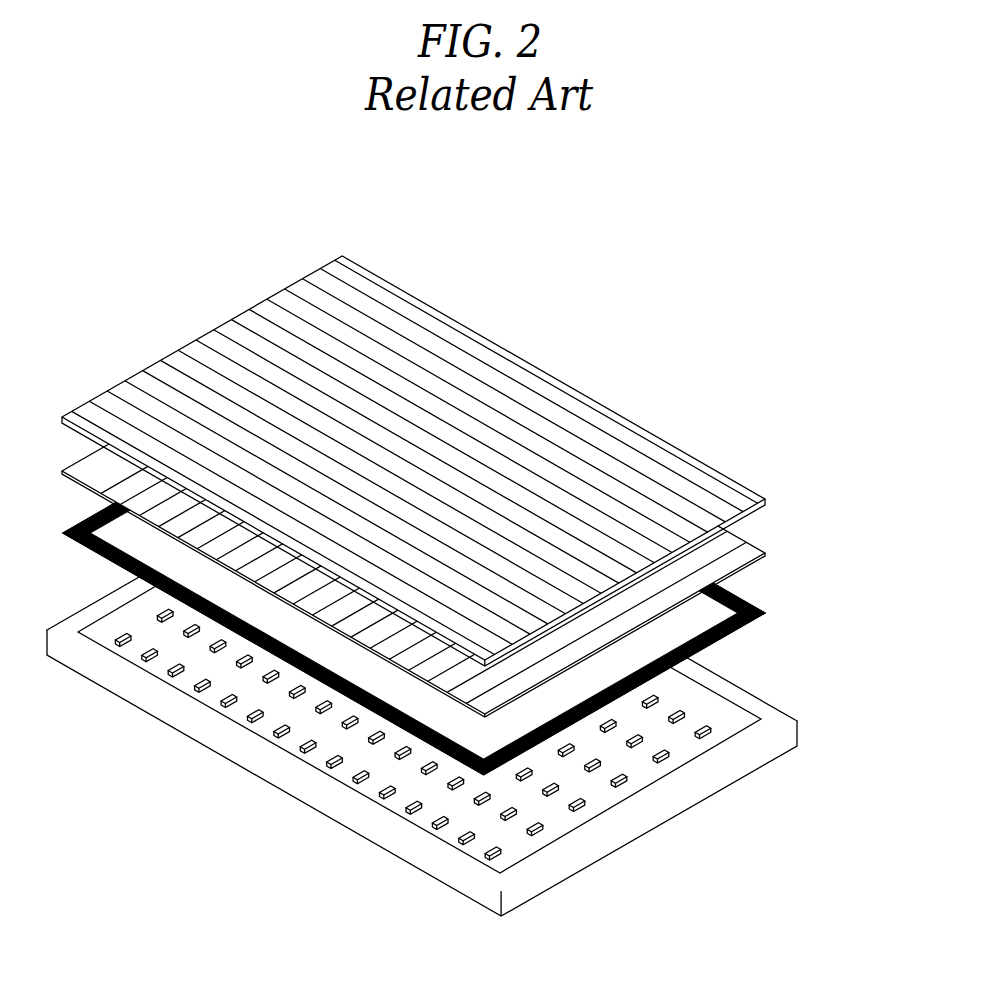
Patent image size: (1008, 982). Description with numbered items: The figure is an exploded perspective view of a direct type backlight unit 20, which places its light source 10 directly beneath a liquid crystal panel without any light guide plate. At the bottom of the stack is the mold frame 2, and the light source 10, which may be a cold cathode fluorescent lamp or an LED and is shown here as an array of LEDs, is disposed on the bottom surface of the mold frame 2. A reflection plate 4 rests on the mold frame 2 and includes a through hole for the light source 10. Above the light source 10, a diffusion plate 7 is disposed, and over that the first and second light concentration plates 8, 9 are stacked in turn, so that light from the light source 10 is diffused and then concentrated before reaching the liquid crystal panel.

The direct type backlight unit 20 is at (637, 210).
The mold frame 2 is at (797, 733).
The reflection plate 4 is at (512, 842).
The light source 10 is at (585, 802).
The diffusion plate 7 is at (760, 604).
The first light concentration plate 8 is at (757, 540).
The second light concentration plate 9 is at (735, 477).